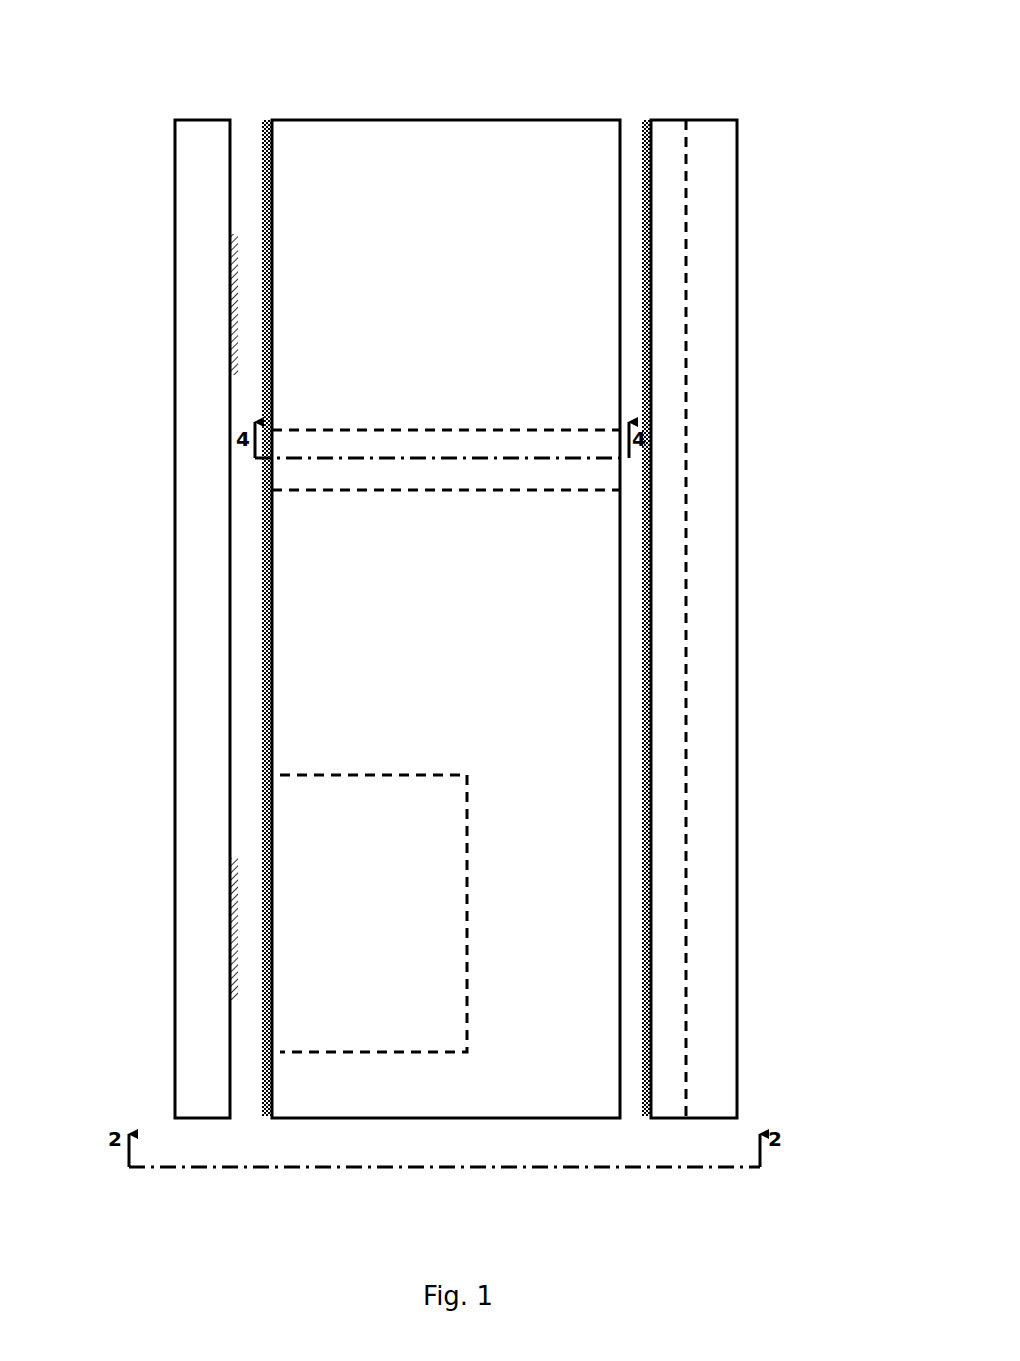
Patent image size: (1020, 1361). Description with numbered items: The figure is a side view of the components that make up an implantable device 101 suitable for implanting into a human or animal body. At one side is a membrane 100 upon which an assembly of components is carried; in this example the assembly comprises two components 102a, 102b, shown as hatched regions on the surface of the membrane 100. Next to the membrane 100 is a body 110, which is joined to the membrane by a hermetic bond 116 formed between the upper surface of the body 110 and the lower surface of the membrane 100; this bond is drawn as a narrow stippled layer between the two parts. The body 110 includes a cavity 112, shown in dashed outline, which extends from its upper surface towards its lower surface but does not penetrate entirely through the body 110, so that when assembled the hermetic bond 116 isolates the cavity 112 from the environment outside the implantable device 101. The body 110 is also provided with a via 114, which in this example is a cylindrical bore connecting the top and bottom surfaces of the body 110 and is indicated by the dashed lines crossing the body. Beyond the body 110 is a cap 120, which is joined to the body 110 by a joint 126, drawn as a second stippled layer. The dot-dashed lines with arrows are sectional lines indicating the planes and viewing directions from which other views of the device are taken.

The membrane 100 is at (203, 170).
The implantable device 101 is at (792, 378).
The component 102a is at (230, 280).
The component 102b is at (230, 940).
The body 110 is at (408, 375).
The cavity 112 is at (362, 882).
The via 114 is at (497, 440).
The hermetic bond 116 is at (262, 160).
The cap 120 is at (706, 221).
The joint 126 is at (651, 152).